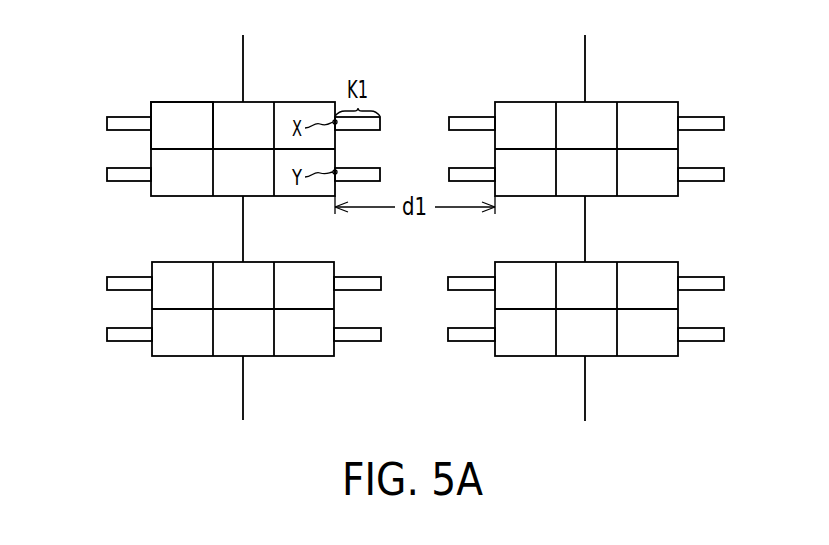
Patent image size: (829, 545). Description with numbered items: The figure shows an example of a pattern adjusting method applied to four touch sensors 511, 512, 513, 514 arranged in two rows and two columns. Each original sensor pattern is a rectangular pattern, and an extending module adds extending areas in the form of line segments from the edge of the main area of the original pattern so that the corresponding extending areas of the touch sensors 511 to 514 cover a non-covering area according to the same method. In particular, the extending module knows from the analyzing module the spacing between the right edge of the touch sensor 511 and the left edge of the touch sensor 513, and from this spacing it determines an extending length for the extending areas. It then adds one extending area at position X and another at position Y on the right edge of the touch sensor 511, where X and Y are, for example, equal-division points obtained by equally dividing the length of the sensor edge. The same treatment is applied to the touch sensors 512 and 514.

The touch sensor 511 is at (292, 102).
The touch sensor 512 is at (300, 262).
The touch sensor 513 is at (642, 103).
The touch sensor 514 is at (643, 262).